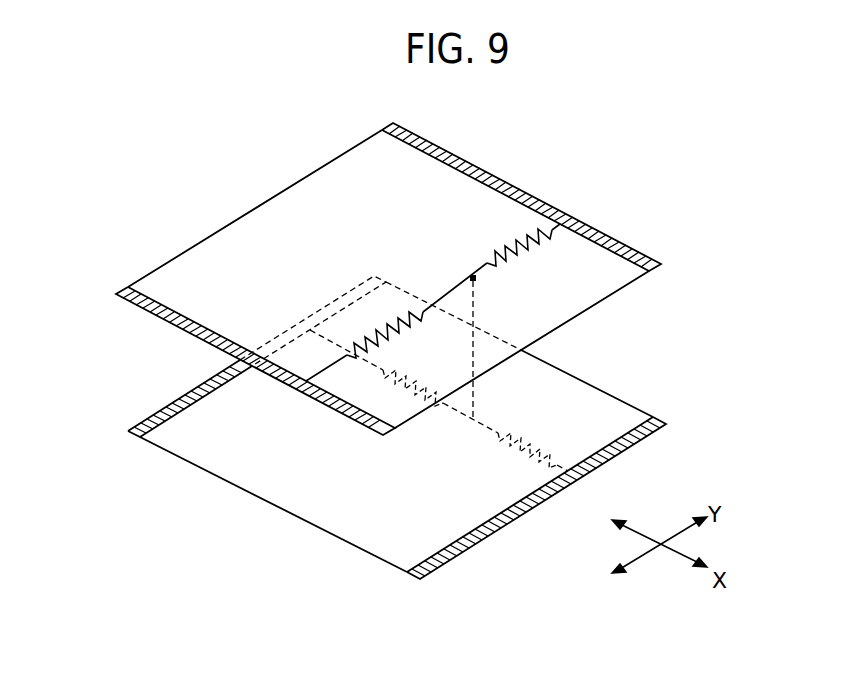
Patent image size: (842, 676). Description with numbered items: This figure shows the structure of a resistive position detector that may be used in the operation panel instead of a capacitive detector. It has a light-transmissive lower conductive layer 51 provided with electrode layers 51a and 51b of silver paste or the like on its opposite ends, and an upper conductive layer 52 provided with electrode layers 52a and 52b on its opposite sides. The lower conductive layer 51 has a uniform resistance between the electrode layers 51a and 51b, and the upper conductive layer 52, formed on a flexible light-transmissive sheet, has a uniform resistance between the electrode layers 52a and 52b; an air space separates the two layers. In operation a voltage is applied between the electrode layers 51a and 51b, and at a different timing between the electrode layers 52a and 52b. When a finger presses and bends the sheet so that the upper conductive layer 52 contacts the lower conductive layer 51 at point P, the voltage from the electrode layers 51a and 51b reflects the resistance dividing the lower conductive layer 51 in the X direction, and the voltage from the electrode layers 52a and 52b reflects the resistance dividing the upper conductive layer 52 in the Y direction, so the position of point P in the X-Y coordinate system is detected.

The lower conductive layer 51 is at (222, 466).
The electrode layer 51a is at (497, 540).
The electrode layer 51b is at (153, 408).
The upper conductive layer 52 is at (273, 210).
The electrode layer 52a is at (481, 173).
The electrode layer 52b is at (130, 307).
The point P is at (472, 276).